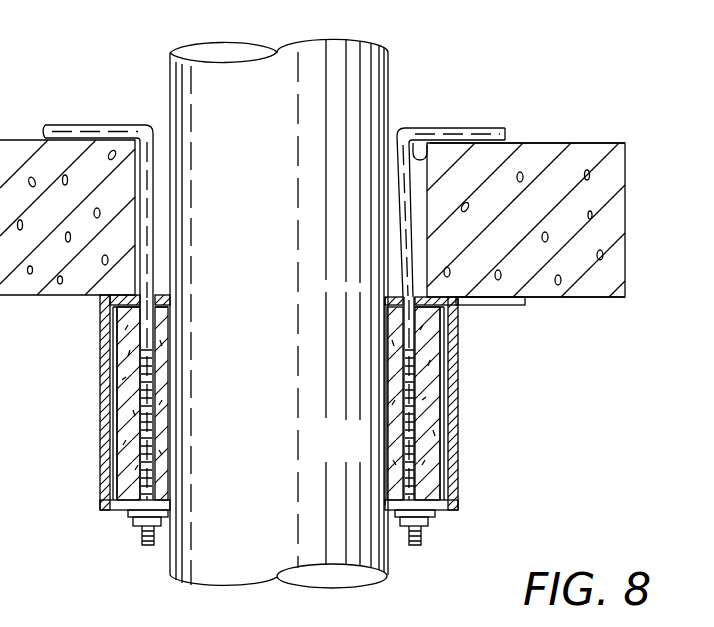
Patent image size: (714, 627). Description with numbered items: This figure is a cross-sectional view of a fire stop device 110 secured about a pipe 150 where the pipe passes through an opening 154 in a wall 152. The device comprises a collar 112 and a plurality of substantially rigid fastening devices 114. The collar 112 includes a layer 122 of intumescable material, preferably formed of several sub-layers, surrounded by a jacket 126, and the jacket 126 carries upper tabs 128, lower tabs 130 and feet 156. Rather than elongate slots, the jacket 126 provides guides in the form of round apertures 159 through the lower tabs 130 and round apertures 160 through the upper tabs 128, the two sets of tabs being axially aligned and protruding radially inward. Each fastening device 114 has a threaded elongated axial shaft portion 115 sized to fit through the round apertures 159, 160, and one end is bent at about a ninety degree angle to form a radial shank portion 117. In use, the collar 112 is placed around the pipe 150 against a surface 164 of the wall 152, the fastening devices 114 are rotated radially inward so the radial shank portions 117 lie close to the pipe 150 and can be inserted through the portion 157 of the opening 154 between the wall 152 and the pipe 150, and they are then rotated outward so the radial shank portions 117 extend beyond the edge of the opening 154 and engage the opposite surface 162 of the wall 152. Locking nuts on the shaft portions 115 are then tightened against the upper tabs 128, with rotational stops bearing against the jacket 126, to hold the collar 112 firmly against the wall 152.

The fire stop device 110 is at (472, 441).
The collar 112 is at (99, 383).
The fastening device 114 is at (162, 206).
The elongated axial shaft portion 115 is at (150, 268).
The radial shank portion 117 is at (73, 127).
The layer of intumescable material 122 is at (400, 380).
The jacket 126 is at (458, 417).
The tabs 128 is at (450, 506).
The tabs 130 is at (170, 298).
The pipe 150 is at (385, 55).
The wall 152 is at (622, 185).
The opening 154 is at (420, 152).
The feet 156 is at (523, 306).
The portion of opening 157 is at (422, 180).
The round apertures 159 is at (407, 300).
The round apertures 160 is at (407, 483).
The surface of wall 162 is at (580, 142).
The surface of wall 164 is at (607, 298).